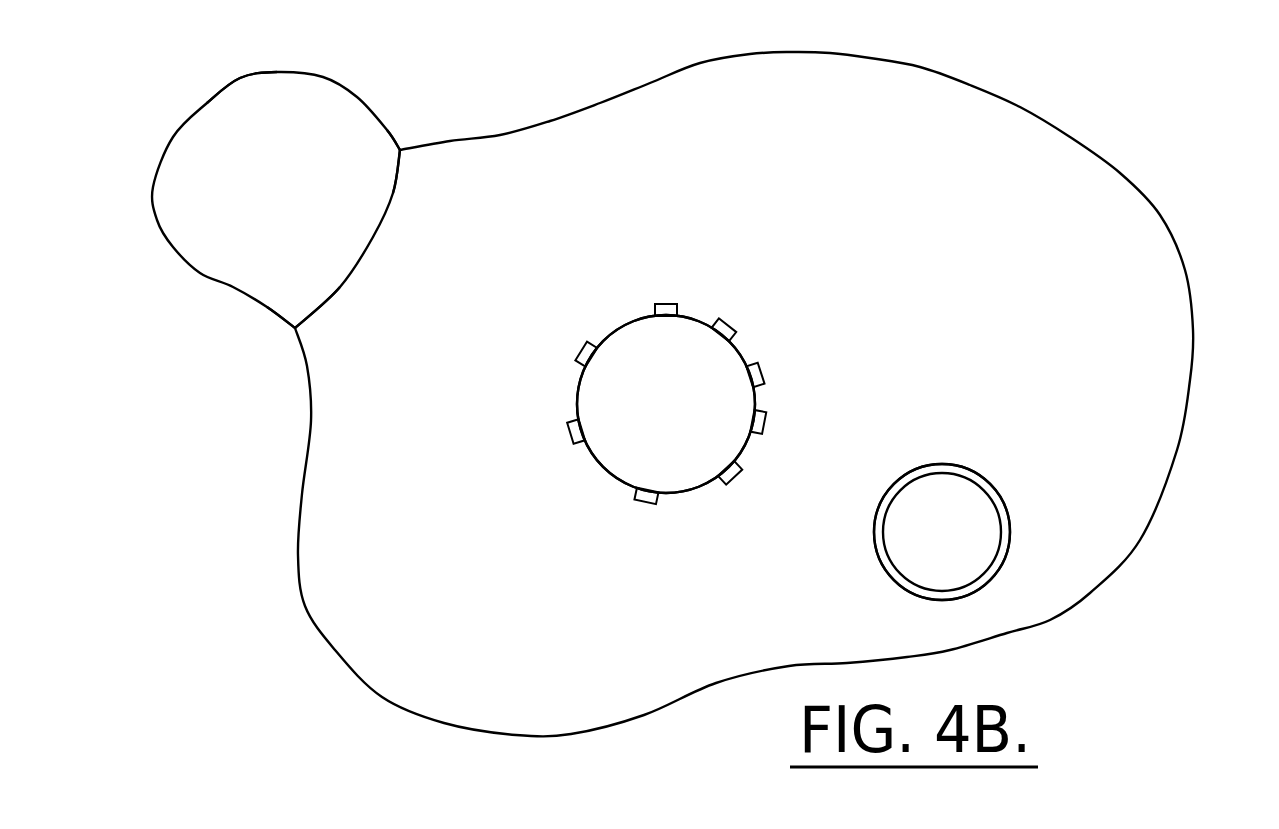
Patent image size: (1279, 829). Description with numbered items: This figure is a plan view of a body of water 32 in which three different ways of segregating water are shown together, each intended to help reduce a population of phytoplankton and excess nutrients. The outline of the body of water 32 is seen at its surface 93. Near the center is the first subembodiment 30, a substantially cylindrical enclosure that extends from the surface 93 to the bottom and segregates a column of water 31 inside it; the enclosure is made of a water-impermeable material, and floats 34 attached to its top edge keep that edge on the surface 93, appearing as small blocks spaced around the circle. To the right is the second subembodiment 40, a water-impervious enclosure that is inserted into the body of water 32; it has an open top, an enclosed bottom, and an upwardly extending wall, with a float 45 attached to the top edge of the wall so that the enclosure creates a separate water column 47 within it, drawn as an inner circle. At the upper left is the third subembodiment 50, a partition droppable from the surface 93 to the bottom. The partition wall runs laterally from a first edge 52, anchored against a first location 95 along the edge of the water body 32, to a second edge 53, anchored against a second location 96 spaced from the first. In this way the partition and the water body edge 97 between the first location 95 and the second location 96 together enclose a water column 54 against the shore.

The first subembodiment 30 is at (758, 333).
The column of water 31 is at (690, 423).
The body of water 32 is at (870, 170).
The floats 34 is at (770, 423).
The second subembodiment 40 is at (987, 462).
The float 45 is at (1009, 523).
The water column 47 is at (960, 550).
The third subembodiment 50 is at (371, 87).
The first edge 52 is at (402, 152).
The second edge 53 is at (297, 330).
The water column 54 is at (301, 205).
The surface 93 is at (1150, 413).
The first location 95 is at (401, 147).
The second location 96 is at (291, 343).
The water body edge 97 is at (233, 92).